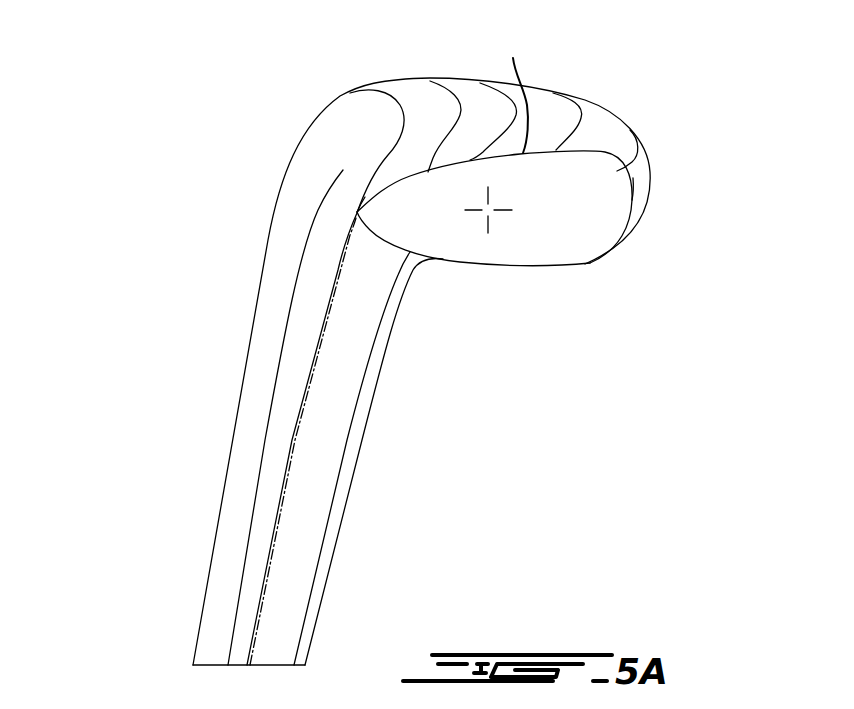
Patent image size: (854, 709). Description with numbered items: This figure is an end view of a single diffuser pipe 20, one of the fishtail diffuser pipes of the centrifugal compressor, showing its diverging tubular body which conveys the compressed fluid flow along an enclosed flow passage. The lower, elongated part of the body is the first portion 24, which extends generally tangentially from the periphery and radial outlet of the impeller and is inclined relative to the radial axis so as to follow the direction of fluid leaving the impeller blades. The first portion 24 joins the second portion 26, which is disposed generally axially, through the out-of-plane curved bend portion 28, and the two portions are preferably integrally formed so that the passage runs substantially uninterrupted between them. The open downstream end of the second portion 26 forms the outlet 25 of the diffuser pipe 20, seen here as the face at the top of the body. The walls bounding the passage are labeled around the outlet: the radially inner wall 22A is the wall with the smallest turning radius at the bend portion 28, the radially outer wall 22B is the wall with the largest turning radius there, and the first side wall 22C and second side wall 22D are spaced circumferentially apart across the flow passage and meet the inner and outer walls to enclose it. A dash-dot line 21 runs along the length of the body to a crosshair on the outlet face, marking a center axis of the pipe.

The diffuser pipe 20 is at (198, 304).
The centerline axis 21 is at (293, 452).
The radially inner wall 22A is at (500, 265).
The radially outer wall 22B is at (521, 93).
The first side wall 22C is at (357, 212).
The second side wall 22D is at (643, 185).
The first portion 24 is at (190, 553).
The outlet 25 is at (537, 242).
The second portion 26 is at (568, 77).
The bend portion 28 is at (288, 132).